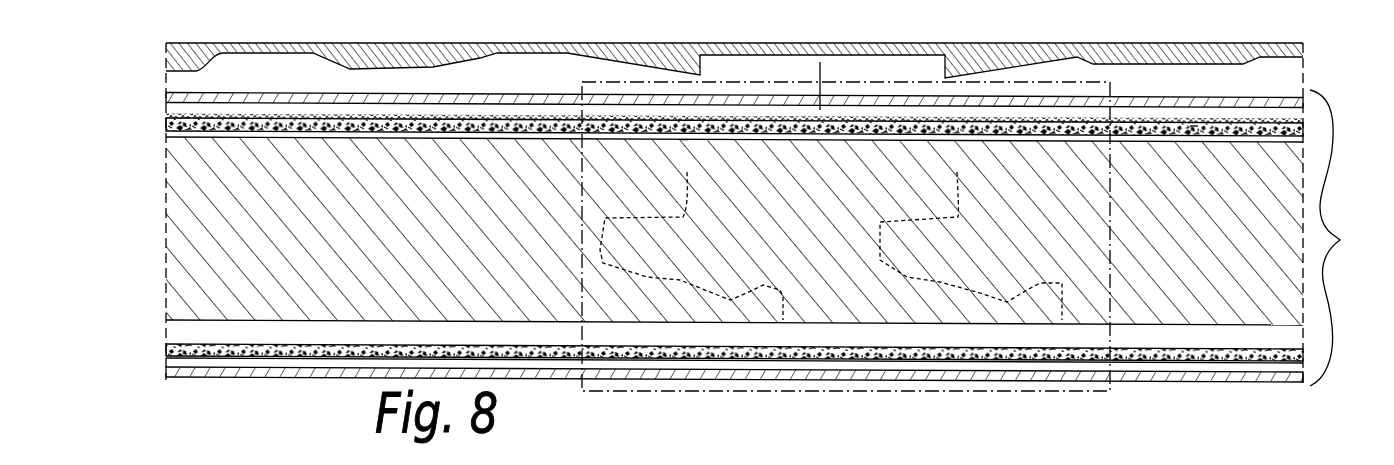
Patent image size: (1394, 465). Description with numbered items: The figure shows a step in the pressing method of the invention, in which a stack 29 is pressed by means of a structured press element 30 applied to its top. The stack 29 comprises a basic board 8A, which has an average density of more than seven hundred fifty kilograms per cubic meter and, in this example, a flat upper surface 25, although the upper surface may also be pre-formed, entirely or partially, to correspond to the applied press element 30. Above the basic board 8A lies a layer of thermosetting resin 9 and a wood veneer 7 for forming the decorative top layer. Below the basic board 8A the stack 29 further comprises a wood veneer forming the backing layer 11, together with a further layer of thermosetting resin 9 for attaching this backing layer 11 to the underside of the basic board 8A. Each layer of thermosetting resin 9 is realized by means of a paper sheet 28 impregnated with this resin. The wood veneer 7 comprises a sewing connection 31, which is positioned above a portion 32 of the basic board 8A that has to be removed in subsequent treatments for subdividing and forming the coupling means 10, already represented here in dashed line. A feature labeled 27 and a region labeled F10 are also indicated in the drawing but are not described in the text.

The wood veneer 7 is at (1237, 103).
The basic board 8A is at (185, 258).
The layer of thermosetting resin 9 is at (167, 128).
The coupling means 10 is at (650, 248).
The backing layer 11 is at (250, 378).
The flat upper surface 25 is at (683, 140).
The opening 27 is at (1195, 128).
The paper sheet 28 is at (188, 133).
The stack 29 is at (1340, 240).
The structured press element 30 is at (1280, 50).
The sewing connection 31 is at (825, 97).
The portion of the basic board 32 is at (773, 223).
The detail region F10 is at (1070, 392).